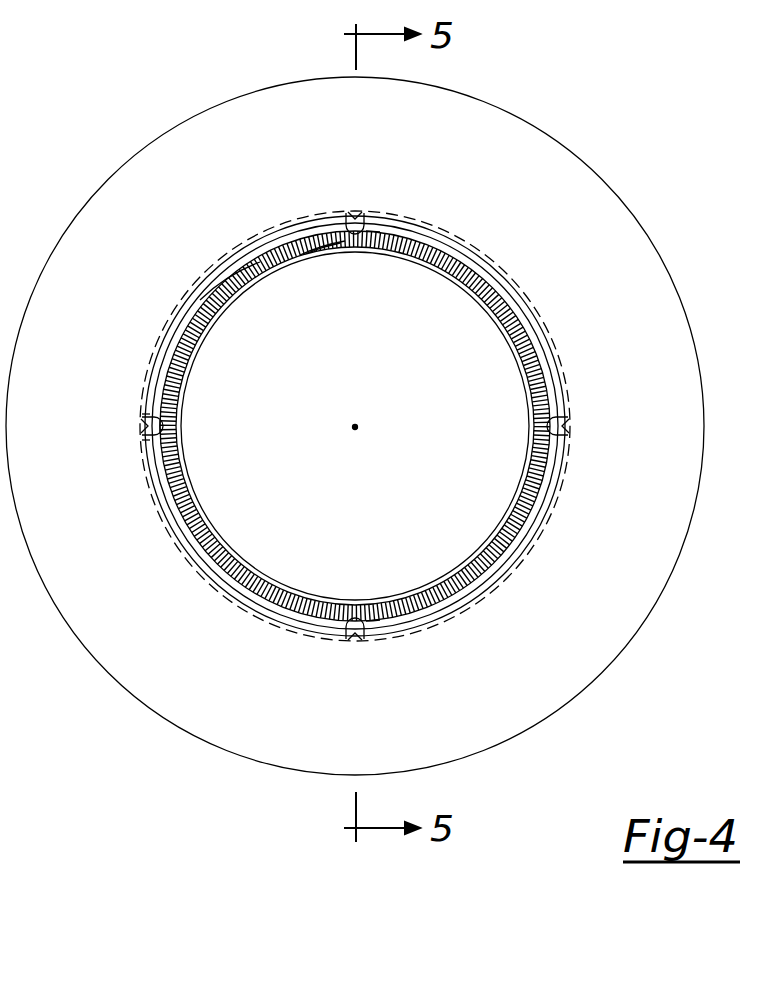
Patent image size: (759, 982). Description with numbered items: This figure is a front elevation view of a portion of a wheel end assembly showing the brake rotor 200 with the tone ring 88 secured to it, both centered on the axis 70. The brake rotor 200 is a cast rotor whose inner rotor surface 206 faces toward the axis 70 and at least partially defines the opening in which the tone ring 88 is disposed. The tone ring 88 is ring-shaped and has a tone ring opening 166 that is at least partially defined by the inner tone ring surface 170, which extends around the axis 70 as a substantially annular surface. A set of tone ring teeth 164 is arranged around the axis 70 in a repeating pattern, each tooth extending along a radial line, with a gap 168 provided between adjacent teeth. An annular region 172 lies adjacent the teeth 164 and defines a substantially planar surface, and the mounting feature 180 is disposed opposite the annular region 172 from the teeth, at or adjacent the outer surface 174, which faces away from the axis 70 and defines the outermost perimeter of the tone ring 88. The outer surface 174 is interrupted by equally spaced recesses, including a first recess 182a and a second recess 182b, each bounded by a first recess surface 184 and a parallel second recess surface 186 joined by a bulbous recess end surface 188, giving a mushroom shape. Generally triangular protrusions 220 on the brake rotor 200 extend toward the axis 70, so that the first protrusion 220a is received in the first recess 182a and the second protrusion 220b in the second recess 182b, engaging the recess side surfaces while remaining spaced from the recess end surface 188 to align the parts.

The brake rotor 200 is at (135, 152).
The outer surface 174 is at (480, 250).
The mounting feature 180 is at (543, 318).
The inner rotor surface 206 is at (565, 373).
The annular region 172 is at (500, 292).
The inner tone ring surface 170 is at (232, 552).
The tone ring 88 is at (228, 308).
The tone ring teeth 164 is at (338, 246).
The gap 168 is at (324, 247).
The tone ring opening 166 is at (429, 409).
The axis 70 is at (352, 432).
The first protrusion 220a is at (364, 200).
The first recess 182a is at (371, 240).
The second protrusion 220b is at (366, 660).
The second recess 182b is at (371, 615).
The protrusion 220 is at (124, 430).
The first recess surface 184 is at (143, 420).
The second recess surface 186 is at (147, 444).
The recess end surface 188 is at (165, 431).